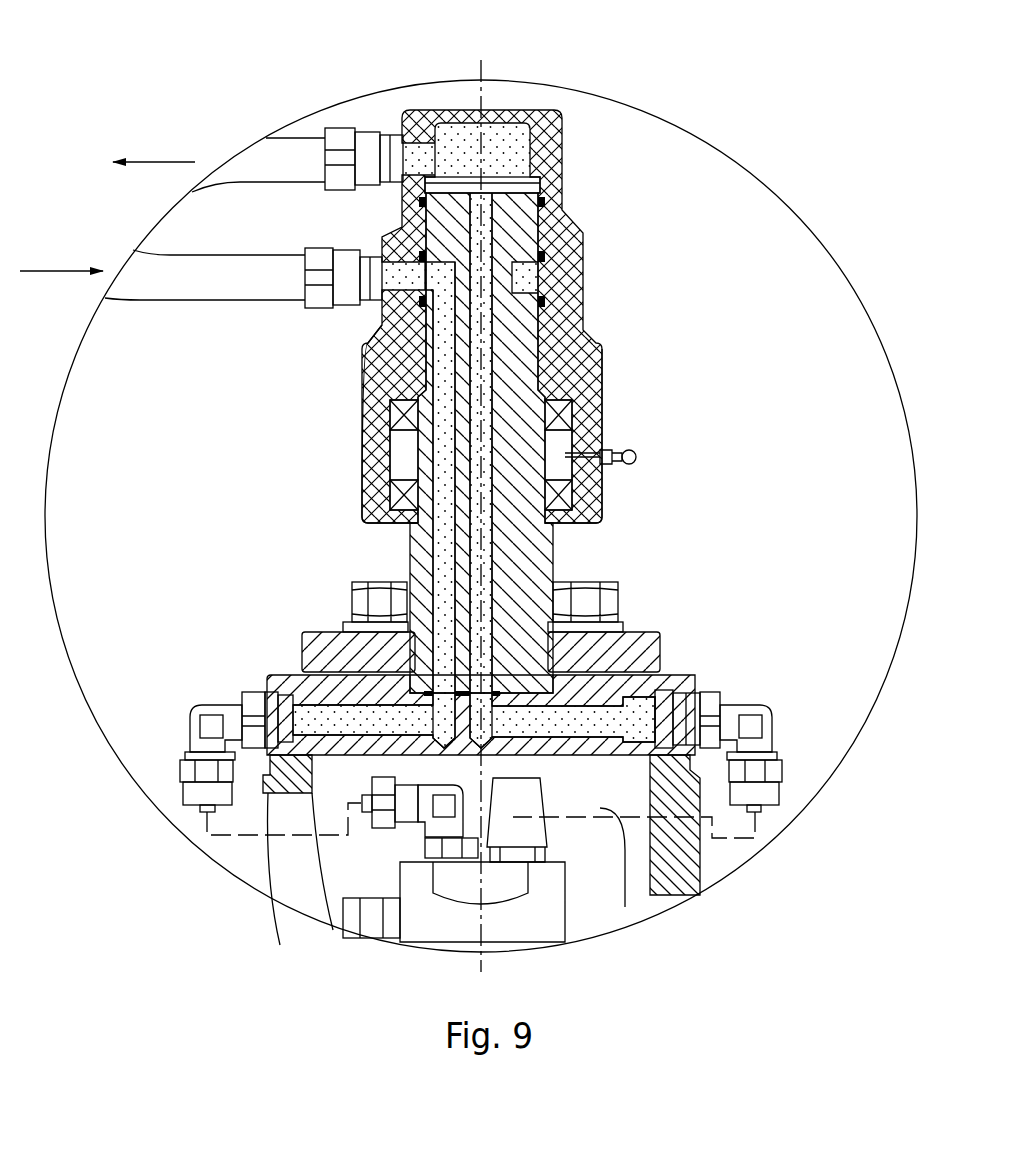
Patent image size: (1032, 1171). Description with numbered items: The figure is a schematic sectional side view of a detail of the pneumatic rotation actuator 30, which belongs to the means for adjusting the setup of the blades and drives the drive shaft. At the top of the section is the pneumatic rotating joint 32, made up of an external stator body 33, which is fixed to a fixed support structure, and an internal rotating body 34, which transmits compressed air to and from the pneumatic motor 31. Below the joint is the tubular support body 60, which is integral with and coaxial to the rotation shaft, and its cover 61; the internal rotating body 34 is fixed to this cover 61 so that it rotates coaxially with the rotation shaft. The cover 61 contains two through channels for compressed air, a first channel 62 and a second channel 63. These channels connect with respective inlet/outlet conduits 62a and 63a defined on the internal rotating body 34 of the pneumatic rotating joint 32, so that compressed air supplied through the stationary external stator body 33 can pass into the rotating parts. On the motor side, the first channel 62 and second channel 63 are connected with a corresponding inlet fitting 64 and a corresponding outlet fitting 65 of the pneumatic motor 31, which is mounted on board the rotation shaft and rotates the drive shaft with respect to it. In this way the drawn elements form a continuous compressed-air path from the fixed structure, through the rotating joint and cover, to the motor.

The pneumatic rotation actuator 30 is at (775, 635).
The pneumatic motor 31 is at (447, 942).
The pneumatic rotating joint 32 is at (600, 264).
The external stator body 33 is at (393, 365).
The internal rotating body 34 is at (548, 552).
The tubular support body 60 is at (712, 872).
The cover 61 is at (640, 690).
The first channel 62 is at (370, 712).
The inlet/outlet conduit 62a is at (437, 525).
The second channel 63 is at (560, 718).
The inlet/outlet conduit 63a is at (483, 455).
The inlet fitting 64 is at (415, 808).
The outlet fitting 65 is at (523, 830).